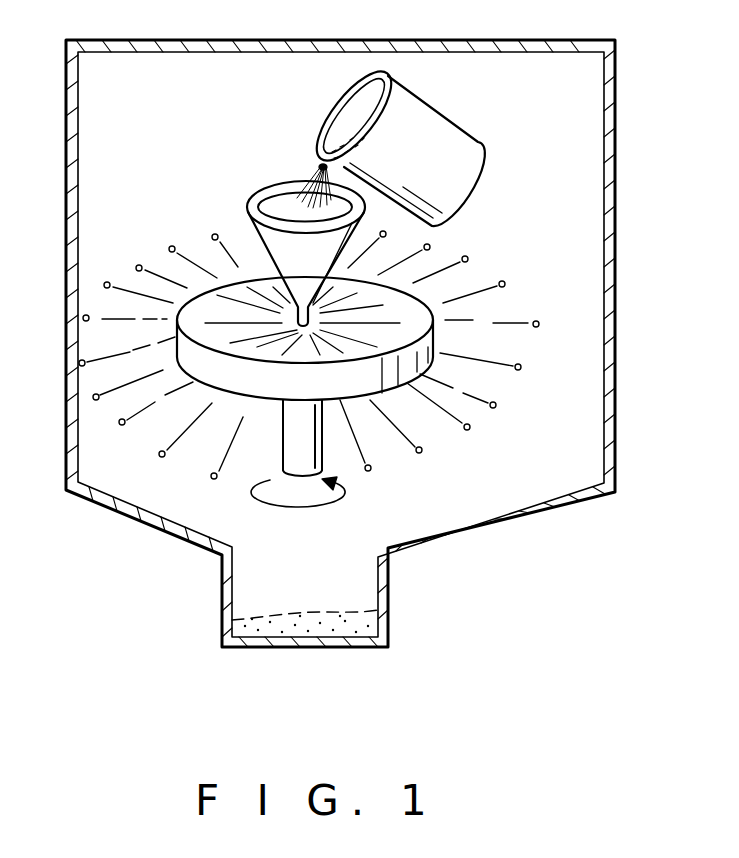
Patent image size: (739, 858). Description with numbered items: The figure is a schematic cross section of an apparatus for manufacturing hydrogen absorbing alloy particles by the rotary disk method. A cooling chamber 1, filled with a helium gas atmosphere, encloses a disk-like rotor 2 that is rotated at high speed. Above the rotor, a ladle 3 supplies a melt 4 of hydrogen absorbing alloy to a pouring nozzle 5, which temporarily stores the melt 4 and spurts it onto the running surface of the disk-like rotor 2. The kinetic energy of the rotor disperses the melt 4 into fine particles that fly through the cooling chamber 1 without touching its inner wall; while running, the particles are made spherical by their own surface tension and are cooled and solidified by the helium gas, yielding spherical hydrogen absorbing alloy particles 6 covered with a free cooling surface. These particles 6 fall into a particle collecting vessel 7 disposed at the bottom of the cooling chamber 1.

The cooling chamber 1 is at (612, 138).
The disk-like rotor 2 is at (440, 342).
The ladle 3 is at (447, 122).
The melt 4 is at (312, 177).
The pouring nozzle 5 is at (362, 296).
The spherical hydrogen absorbing alloy particles 6 is at (74, 358).
The particle collecting vessel 7 is at (390, 615).